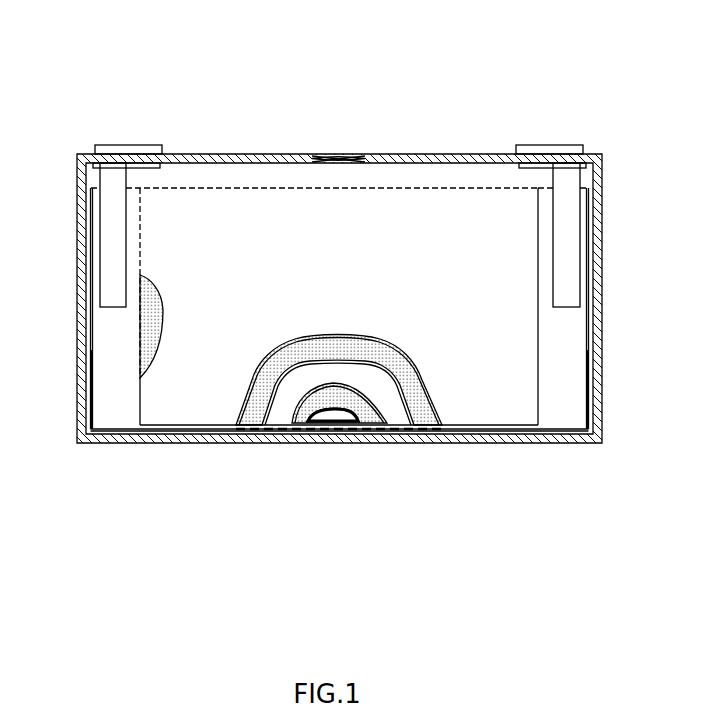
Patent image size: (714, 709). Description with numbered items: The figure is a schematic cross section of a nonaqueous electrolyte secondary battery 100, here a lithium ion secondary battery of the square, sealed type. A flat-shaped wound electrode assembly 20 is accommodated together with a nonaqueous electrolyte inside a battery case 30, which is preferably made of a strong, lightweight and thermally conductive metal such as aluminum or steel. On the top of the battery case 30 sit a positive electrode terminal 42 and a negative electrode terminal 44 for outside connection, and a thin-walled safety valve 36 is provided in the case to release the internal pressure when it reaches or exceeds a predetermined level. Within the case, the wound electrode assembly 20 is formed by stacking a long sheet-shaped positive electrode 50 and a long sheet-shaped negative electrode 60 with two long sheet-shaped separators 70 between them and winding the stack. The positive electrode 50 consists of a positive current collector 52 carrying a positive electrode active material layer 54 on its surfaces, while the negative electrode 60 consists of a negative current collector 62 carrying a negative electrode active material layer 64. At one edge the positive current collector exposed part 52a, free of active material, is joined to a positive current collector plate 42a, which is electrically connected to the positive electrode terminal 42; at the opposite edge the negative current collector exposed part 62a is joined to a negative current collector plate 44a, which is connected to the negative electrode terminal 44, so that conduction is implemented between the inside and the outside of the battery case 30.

The nonaqueous electrolyte secondary battery 100 is at (382, 231).
The wound electrode assembly 20 is at (261, 184).
The battery case 30 is at (604, 263).
The safety valve 36 is at (350, 155).
The positive electrode terminal 42 is at (137, 146).
The positive current collector plate 42a is at (113, 227).
The negative electrode terminal 44 is at (560, 146).
The negative current collector plate 44a is at (570, 220).
The positive electrode 50 is at (291, 404).
The positive current collector 52 is at (93, 332).
The positive current collector exposed part 52a is at (103, 398).
The positive electrode active material layer 54 is at (165, 303).
The negative electrode 60 is at (339, 458).
The negative current collector 62 is at (588, 333).
The negative current collector exposed part 62a is at (568, 397).
The negative electrode active material layer 64 is at (310, 413).
The separator 70 is at (182, 378).